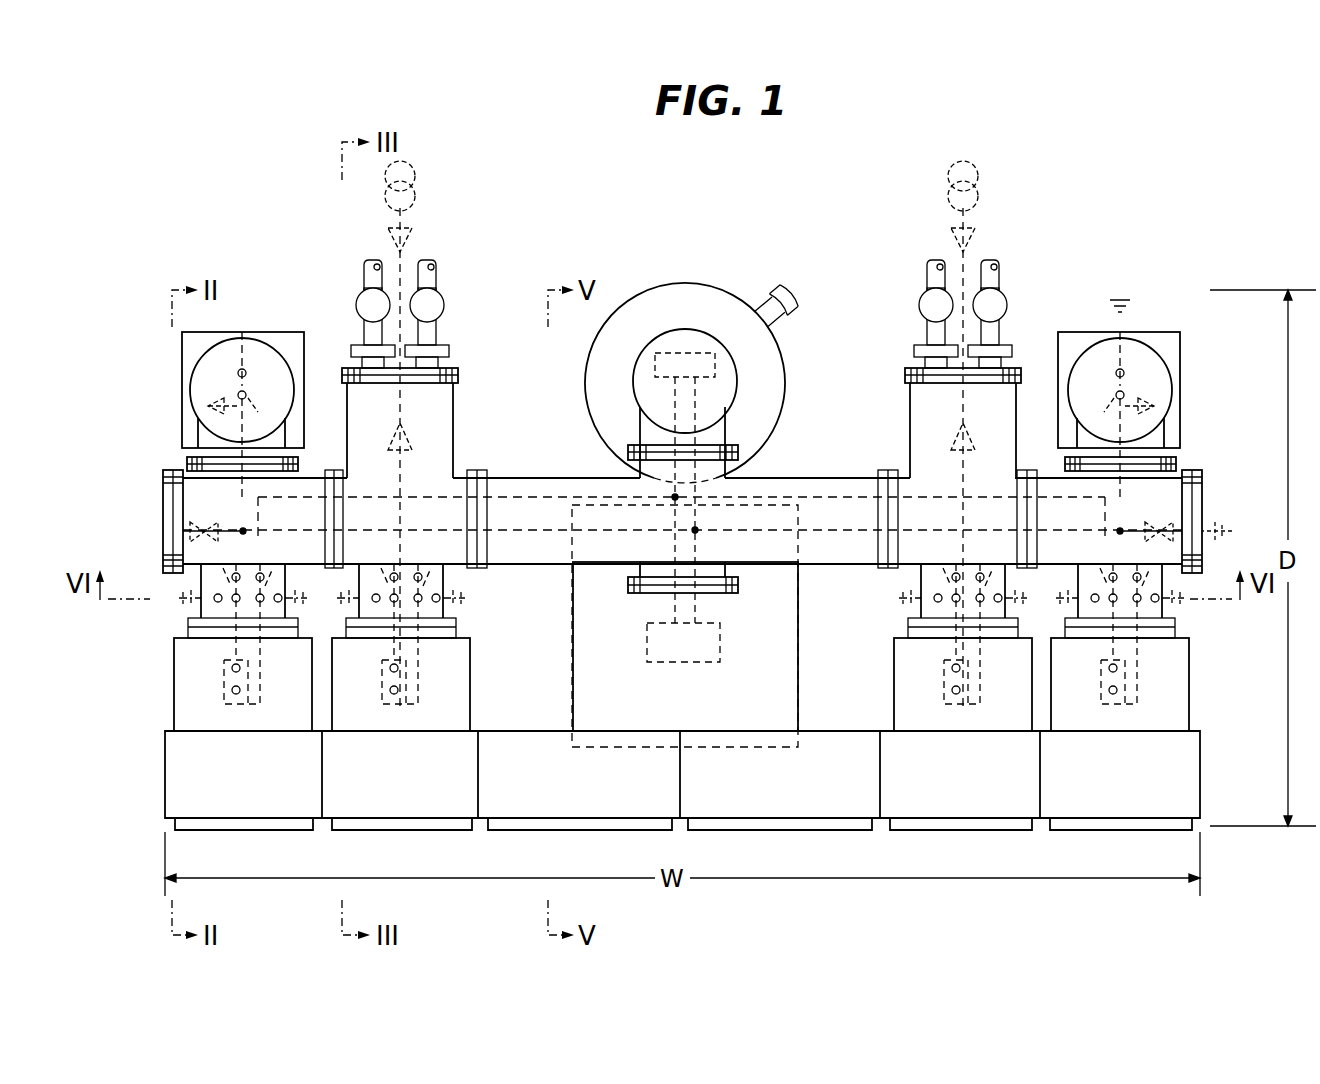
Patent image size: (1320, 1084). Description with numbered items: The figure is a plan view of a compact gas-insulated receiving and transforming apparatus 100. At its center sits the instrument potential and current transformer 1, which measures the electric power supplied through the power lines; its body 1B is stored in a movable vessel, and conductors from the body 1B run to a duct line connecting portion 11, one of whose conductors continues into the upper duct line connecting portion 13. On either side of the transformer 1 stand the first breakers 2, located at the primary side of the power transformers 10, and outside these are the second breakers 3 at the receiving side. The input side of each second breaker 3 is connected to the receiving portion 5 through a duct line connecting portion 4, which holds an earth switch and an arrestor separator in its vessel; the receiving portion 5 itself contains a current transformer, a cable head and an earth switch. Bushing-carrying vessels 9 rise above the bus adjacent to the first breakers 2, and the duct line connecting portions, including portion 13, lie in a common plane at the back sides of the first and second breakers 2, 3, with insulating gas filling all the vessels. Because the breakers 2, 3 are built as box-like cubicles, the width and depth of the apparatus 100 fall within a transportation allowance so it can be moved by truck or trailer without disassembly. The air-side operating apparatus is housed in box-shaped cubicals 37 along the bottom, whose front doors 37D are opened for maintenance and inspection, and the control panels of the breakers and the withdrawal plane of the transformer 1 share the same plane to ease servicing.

The receiving and transforming apparatus 100 is at (1101, 247).
The instrument potential and current transformer 1 is at (800, 608).
The body of the instrument potential and current transformer 1B is at (667, 662).
The first breaker 2 is at (470, 640).
The second breaker 3 is at (175, 684).
The duct line connecting portion 4 is at (187, 462).
The receiving portion 5 is at (182, 345).
The bushing tank 9 is at (455, 449).
The power transformer 10 is at (412, 194).
The duct line connecting portion 11 is at (728, 284).
The upper duct line connecting portion 13 is at (795, 478).
The box shaped cubical 37 is at (1200, 763).
The front door 37D is at (1083, 822).